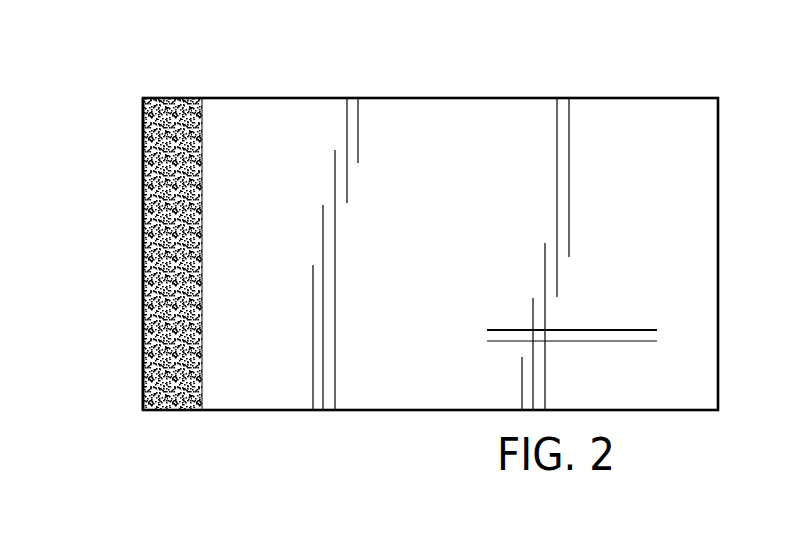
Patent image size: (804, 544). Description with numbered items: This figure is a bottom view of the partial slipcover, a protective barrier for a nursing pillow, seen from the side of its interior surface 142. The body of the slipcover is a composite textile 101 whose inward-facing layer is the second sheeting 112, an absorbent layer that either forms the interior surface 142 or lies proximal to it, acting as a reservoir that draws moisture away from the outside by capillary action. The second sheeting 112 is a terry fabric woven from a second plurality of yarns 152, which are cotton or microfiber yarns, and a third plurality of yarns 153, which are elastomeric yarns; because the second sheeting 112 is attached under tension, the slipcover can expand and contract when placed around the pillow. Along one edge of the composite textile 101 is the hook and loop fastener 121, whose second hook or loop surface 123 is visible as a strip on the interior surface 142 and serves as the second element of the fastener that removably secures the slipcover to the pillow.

The composite textile 101 is at (640, 100).
The second sheeting 112 is at (282, 152).
The hook and loop fastener 121 is at (150, 264).
The second hook or loop surface 123 is at (166, 105).
The interior surface 142 is at (497, 125).
The second plurality of yarns 152 is at (347, 203).
The third plurality of yarns 153 is at (596, 331).